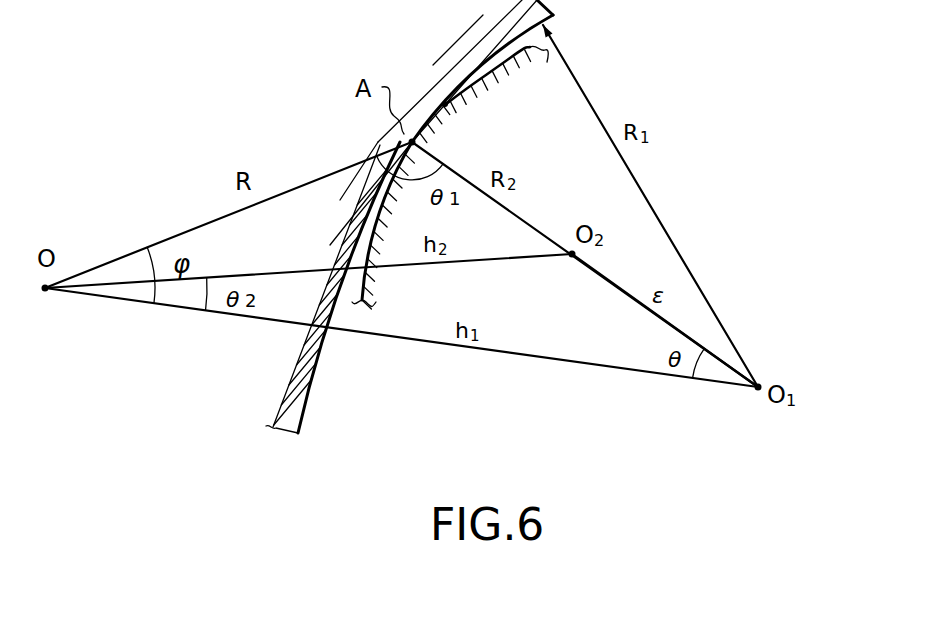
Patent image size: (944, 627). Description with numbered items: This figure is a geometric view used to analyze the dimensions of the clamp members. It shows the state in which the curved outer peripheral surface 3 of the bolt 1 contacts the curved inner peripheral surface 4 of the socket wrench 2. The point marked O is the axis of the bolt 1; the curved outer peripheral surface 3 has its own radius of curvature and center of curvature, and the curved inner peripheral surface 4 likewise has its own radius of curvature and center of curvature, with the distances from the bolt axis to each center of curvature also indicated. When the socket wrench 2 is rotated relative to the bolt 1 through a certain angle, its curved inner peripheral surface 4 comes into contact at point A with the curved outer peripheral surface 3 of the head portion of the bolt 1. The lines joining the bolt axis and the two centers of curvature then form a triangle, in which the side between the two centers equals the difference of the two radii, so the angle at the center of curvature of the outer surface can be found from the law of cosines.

The bolt 1 is at (278, 374).
The socket wrench 2 is at (510, 80).
The curved outer peripheral surface 3 is at (312, 378).
The curved inner peripheral surface 4 is at (537, 44).